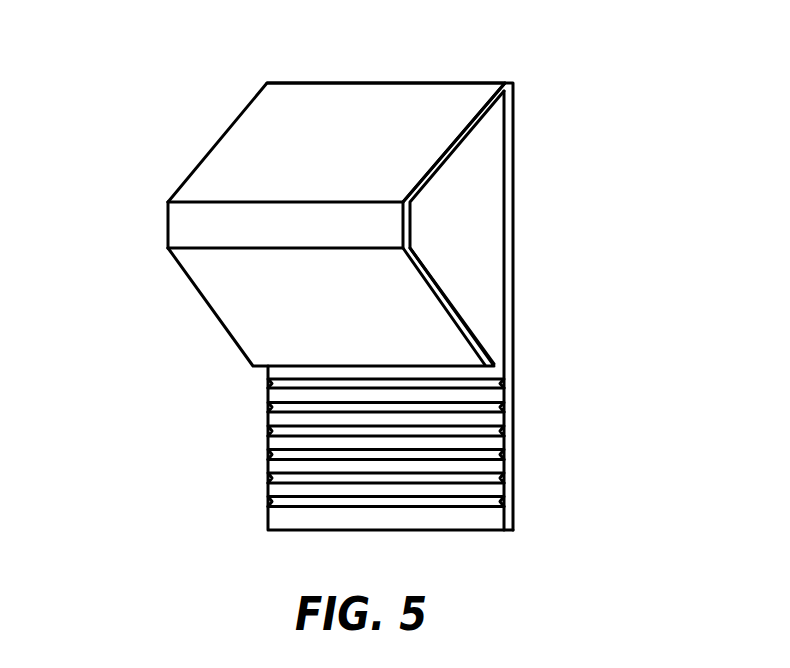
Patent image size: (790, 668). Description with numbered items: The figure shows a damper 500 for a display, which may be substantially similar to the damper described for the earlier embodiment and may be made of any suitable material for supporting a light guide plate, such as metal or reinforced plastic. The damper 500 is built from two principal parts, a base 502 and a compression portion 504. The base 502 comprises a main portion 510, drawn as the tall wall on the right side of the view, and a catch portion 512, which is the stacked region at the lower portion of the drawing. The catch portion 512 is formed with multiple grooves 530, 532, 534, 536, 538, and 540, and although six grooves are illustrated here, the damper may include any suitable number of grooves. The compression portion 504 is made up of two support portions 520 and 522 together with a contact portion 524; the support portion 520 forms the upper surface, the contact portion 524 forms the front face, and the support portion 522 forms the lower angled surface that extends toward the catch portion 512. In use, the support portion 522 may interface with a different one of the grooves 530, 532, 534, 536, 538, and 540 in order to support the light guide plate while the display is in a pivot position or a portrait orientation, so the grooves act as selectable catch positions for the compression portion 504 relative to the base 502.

The damper 500 is at (609, 95).
The base 502 is at (520, 325).
The compression portion 504 is at (160, 235).
The main portion 510 is at (485, 240).
The catch portion 512 is at (252, 382).
The support portion 520 is at (250, 127).
The support portion 522 is at (250, 313).
The contact portion 524 is at (193, 210).
The groove 530 is at (513, 385).
The groove 532 is at (513, 412).
The groove 534 is at (513, 434).
The groove 536 is at (513, 458).
The groove 538 is at (513, 482).
The groove 540 is at (513, 505).